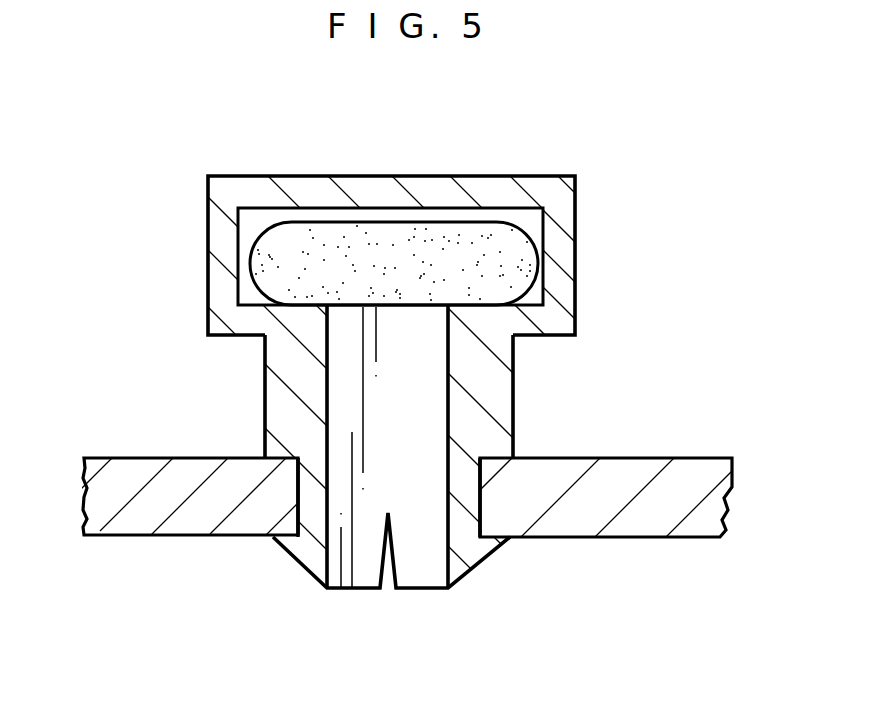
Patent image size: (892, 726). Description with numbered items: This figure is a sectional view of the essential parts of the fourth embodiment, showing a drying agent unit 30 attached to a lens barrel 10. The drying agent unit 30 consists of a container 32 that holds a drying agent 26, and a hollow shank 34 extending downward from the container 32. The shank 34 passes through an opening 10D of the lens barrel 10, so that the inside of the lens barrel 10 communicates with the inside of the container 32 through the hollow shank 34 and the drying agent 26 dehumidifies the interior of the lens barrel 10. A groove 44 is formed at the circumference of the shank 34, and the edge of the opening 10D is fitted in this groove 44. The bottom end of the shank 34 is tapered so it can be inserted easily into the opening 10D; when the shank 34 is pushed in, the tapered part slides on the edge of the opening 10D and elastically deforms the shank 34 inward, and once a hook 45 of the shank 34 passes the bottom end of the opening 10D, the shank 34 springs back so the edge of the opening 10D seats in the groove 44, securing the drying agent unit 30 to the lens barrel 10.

The lens barrel 10 is at (188, 470).
The opening 10D is at (296, 497).
The drying agent 26 is at (318, 235).
The drying agent unit 30 is at (446, 370).
The container 32 is at (566, 256).
The shank 34 is at (505, 411).
The groove 44 is at (482, 500).
The hook 45 is at (498, 550).